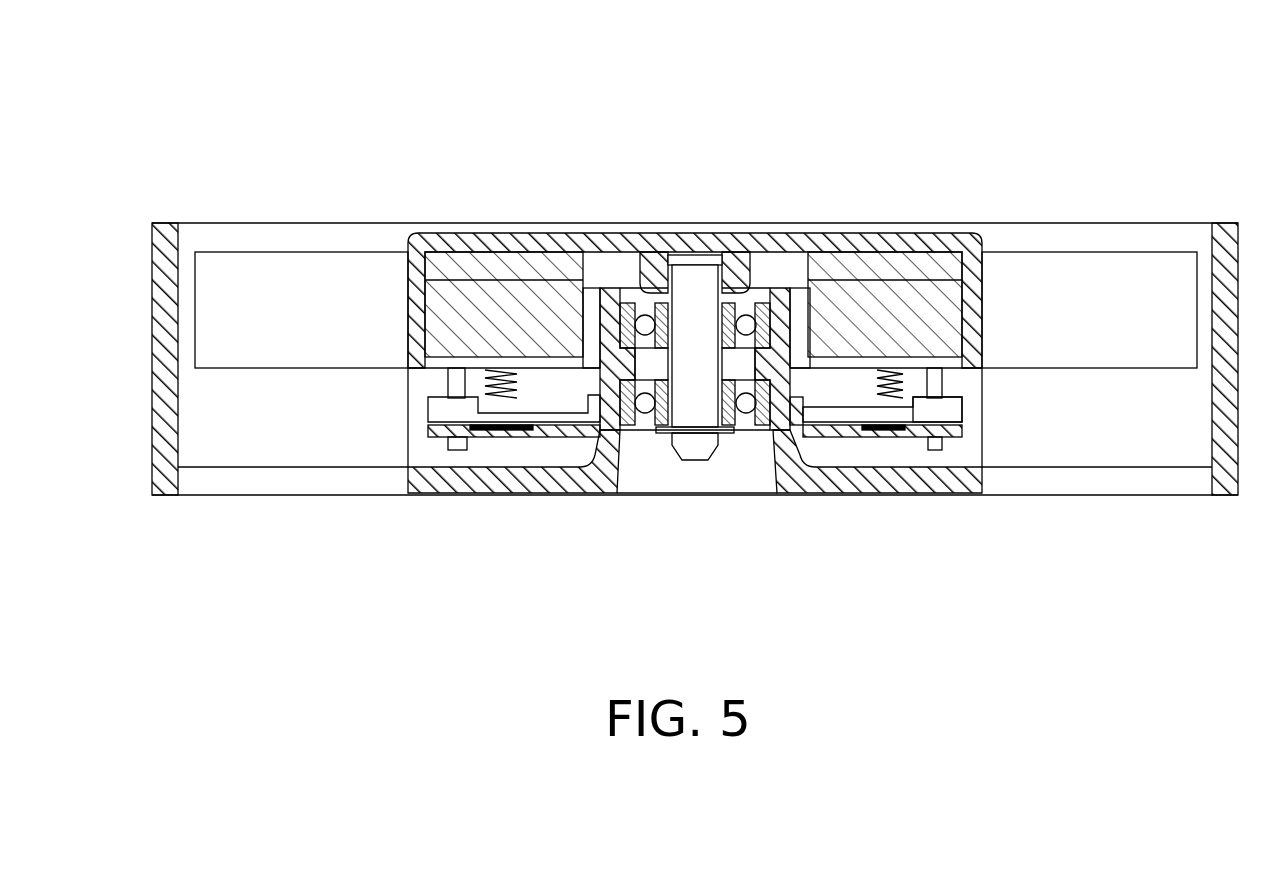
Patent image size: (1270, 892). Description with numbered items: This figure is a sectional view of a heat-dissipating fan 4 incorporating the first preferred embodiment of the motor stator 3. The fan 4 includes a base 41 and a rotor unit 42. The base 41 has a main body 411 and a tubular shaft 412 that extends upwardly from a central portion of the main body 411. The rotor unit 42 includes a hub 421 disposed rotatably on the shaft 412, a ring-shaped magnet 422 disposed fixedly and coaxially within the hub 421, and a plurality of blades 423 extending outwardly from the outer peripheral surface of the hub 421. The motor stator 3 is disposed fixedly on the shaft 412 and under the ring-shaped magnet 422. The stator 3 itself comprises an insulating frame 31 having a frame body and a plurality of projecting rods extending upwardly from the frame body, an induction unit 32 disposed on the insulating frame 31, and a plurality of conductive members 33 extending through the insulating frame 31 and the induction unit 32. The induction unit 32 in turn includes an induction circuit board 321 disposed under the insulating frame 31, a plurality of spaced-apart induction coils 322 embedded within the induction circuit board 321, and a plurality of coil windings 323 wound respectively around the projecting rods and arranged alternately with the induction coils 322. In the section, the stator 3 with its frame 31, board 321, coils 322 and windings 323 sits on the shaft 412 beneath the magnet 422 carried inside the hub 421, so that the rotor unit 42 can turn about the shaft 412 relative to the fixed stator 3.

The motor stator 3 is at (691, 473).
The heat-dissipating fan 4 is at (380, 168).
The insulating frame 31 is at (410, 410).
The induction unit 32 is at (487, 465).
The conductive members 33 is at (456, 452).
The base 41 is at (790, 515).
The rotor unit 42 is at (530, 225).
The induction circuit board 321 is at (965, 429).
The induction coils 322 is at (517, 437).
The coil windings 323 is at (462, 383).
The main body 411 is at (836, 495).
The tubular shaft 412 is at (610, 287).
The hub 421 is at (707, 233).
The ring-shaped magnet 422 is at (462, 297).
The blades 423 is at (243, 263).